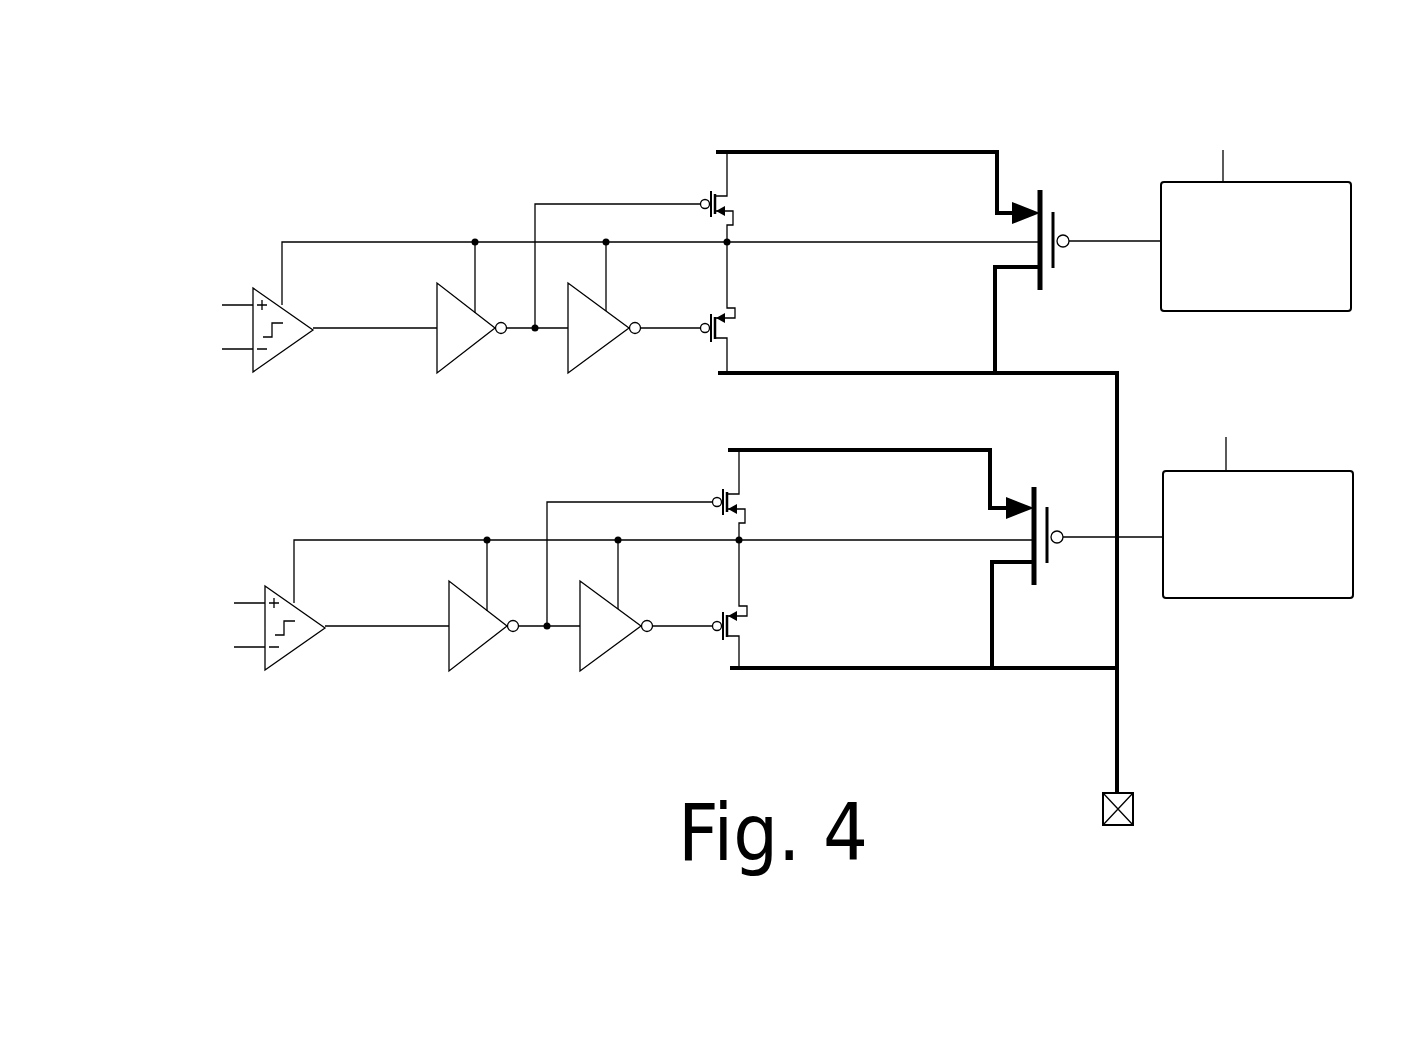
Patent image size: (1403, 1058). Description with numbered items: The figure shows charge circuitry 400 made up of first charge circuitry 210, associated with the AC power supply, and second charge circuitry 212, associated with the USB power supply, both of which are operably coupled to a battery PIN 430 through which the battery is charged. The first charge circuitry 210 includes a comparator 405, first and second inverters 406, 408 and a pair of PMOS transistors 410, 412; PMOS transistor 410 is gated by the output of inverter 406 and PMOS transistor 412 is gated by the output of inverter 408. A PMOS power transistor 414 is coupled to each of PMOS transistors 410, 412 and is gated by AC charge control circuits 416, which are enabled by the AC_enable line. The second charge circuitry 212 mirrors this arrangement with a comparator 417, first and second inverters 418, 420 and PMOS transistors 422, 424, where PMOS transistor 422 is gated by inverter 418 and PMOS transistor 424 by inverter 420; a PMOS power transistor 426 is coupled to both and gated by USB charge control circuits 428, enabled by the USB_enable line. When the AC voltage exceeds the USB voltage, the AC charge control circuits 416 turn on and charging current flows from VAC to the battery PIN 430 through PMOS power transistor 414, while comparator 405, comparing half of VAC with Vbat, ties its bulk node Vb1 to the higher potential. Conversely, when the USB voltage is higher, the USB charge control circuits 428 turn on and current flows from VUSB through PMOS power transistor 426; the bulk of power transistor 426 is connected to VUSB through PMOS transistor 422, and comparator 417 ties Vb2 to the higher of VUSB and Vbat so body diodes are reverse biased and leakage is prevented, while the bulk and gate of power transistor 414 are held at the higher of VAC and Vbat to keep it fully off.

The charge circuitry 400 is at (177, 90).
The first charge circuitry 210 is at (296, 192).
The second charge circuitry 212 is at (298, 495).
The comparator 405 is at (264, 288).
The first inverter 406 is at (445, 375).
The second inverter 408 is at (583, 372).
The PMOS transistor 410 is at (701, 168).
The PMOS transistor 412 is at (696, 370).
The PMOS power transistor 414 is at (1049, 138).
The AC charge control circuits 416 is at (1307, 182).
The comparator 417 is at (276, 586).
The first inverter 418 is at (457, 670).
The second inverter 420 is at (598, 660).
The PMOS transistor 422 is at (713, 466).
The PMOS transistor 424 is at (710, 665).
The PMOS power transistor 426 is at (1026, 455).
The USB charge control circuits 428 is at (1298, 471).
The battery PIN 430 is at (1132, 790).